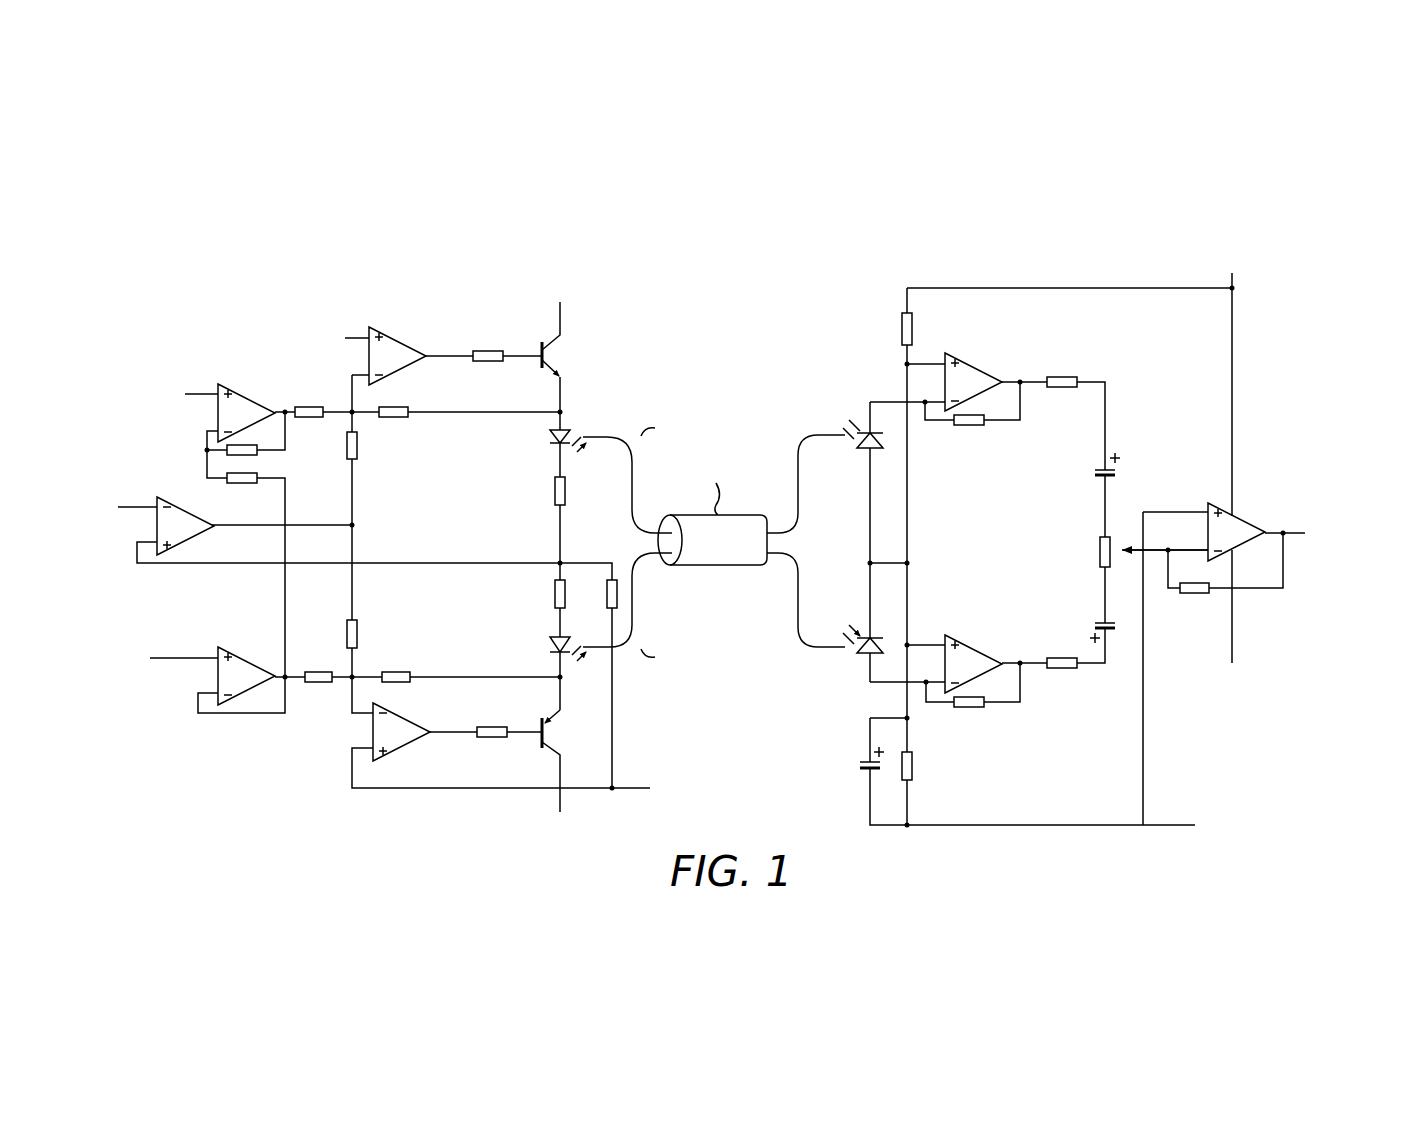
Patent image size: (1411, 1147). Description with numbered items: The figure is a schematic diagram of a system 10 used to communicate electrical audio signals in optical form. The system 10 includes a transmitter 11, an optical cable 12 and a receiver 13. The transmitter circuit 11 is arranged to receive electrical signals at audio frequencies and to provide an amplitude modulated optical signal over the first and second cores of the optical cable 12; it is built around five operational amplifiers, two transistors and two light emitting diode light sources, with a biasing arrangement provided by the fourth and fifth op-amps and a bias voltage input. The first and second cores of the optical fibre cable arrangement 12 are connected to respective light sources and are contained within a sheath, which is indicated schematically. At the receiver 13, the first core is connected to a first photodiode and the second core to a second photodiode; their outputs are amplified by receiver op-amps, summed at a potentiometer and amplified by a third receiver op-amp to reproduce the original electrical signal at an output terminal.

The system 10 is at (455, 206).
The transmitter circuit 11 is at (376, 287).
The optical cable 12 is at (738, 350).
The receiver 13 is at (1078, 257).